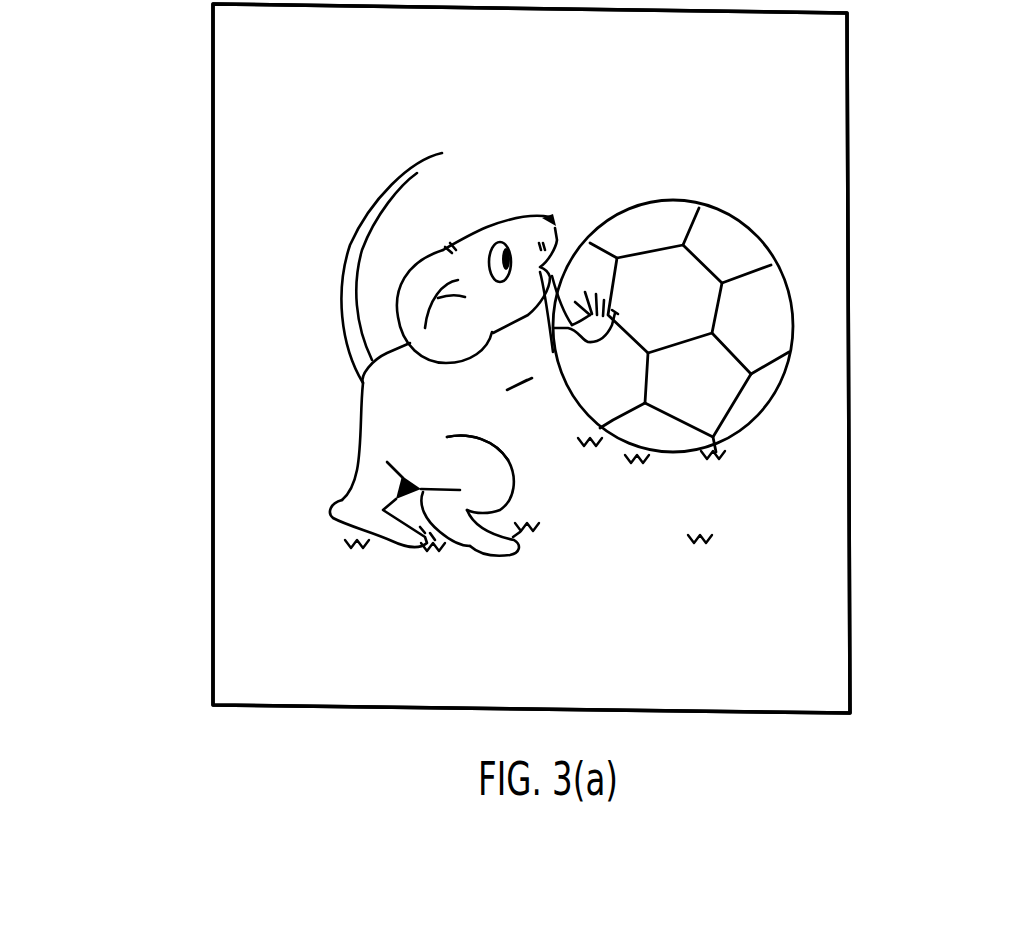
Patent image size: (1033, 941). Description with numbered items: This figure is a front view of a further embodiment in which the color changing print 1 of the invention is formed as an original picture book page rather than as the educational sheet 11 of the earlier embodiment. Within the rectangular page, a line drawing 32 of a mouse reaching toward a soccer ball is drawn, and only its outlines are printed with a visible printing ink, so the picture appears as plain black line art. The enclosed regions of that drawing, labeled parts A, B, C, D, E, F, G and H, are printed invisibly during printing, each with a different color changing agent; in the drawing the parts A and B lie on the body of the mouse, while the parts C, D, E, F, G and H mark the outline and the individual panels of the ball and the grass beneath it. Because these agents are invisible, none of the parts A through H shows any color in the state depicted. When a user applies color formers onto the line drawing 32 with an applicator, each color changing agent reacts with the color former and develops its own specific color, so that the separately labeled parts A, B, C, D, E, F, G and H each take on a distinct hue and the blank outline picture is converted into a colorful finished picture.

The color changing print 1 is at (182, 127).
The educational sheet 11 is at (235, 440).
The line drawing 32 is at (347, 183).
The part A is at (517, 230).
The part B is at (508, 410).
The part C is at (697, 400).
The part D is at (583, 250).
The part E is at (656, 220).
The part F is at (708, 295).
The part G is at (755, 400).
The part H is at (617, 487).